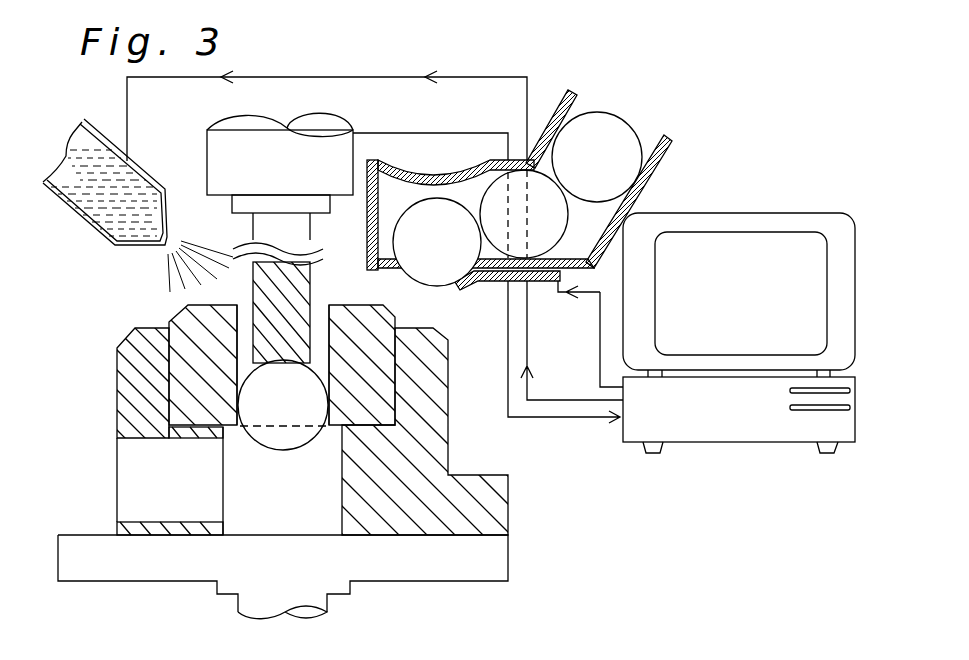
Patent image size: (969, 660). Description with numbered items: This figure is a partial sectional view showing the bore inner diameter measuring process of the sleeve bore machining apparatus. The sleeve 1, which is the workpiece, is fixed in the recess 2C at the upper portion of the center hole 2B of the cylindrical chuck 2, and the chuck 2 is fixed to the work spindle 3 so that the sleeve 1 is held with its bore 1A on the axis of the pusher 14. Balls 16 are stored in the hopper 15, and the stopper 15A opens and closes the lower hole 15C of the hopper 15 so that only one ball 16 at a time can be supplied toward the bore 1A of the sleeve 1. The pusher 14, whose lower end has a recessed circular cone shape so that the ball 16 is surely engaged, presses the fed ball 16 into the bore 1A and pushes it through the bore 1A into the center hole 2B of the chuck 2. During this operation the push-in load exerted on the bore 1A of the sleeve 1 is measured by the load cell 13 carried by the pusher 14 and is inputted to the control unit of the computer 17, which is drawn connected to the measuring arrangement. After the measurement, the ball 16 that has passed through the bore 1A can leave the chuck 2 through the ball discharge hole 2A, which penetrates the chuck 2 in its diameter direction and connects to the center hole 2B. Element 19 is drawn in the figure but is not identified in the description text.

The sleeve 1 is at (255, 365).
The bore 1A is at (240, 394).
The chuck 2 is at (331, 458).
The ball discharge hole 2A is at (142, 441).
The center hole 2B is at (243, 515).
The recess 2C is at (117, 361).
The work spindle 3 is at (88, 563).
The load cell 13 is at (233, 173).
The pusher 14 is at (275, 292).
The hopper 15 is at (519, 237).
The stopper 15A is at (498, 302).
The lower hole 15C is at (396, 262).
The ball 16 is at (278, 383).
The computer 17 is at (648, 430).
The lubricant container 19 is at (97, 137).